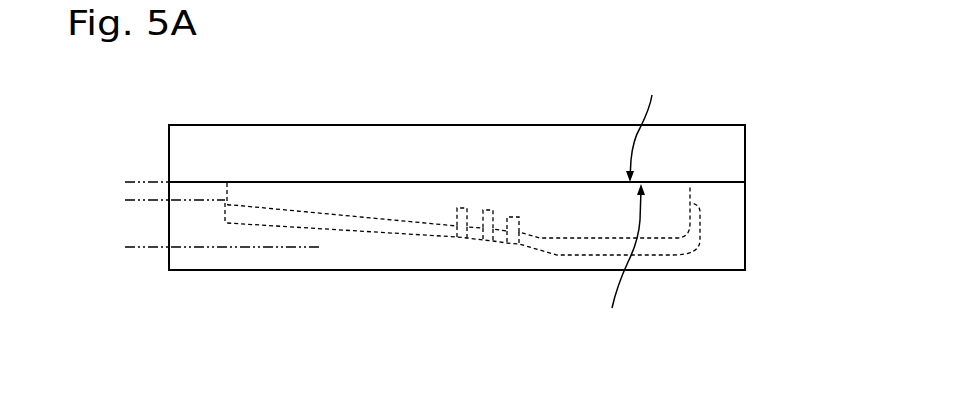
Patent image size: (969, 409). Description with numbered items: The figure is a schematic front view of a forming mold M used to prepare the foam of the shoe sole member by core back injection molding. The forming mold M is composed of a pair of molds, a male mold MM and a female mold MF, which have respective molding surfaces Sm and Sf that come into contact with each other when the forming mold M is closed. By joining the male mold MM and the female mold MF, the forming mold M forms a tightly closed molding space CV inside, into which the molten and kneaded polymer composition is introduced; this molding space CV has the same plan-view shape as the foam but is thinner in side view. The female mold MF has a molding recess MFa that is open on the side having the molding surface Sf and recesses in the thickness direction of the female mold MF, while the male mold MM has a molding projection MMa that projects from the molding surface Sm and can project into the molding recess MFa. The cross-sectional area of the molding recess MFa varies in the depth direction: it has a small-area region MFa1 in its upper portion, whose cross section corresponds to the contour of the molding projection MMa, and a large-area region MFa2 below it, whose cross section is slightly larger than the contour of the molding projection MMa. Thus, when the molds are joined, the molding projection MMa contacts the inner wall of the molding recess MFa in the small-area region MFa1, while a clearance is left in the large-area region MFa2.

The forming mold M is at (503, 154).
The male mold MM is at (742, 153).
The female mold MF is at (750, 233).
The molding recess MFa is at (462, 278).
The small-area region MFa1 is at (130, 182).
The large-area region MFa2 is at (130, 200).
The molding space CV is at (402, 237).
The molding projection MMa is at (415, 188).
The molding surface of the female mold Sf is at (645, 123).
The molding surface of the male mold Sm is at (625, 256).